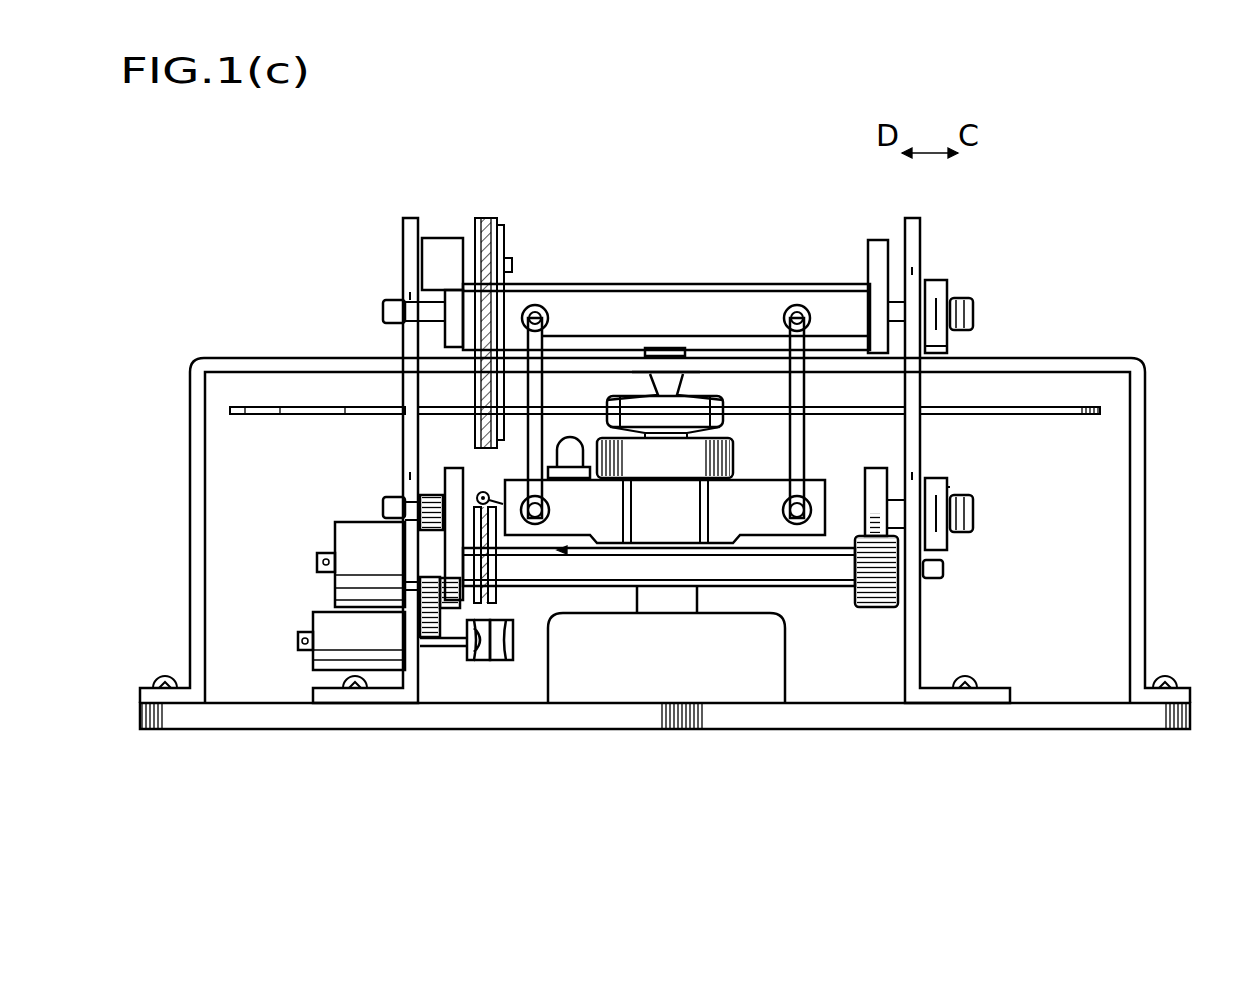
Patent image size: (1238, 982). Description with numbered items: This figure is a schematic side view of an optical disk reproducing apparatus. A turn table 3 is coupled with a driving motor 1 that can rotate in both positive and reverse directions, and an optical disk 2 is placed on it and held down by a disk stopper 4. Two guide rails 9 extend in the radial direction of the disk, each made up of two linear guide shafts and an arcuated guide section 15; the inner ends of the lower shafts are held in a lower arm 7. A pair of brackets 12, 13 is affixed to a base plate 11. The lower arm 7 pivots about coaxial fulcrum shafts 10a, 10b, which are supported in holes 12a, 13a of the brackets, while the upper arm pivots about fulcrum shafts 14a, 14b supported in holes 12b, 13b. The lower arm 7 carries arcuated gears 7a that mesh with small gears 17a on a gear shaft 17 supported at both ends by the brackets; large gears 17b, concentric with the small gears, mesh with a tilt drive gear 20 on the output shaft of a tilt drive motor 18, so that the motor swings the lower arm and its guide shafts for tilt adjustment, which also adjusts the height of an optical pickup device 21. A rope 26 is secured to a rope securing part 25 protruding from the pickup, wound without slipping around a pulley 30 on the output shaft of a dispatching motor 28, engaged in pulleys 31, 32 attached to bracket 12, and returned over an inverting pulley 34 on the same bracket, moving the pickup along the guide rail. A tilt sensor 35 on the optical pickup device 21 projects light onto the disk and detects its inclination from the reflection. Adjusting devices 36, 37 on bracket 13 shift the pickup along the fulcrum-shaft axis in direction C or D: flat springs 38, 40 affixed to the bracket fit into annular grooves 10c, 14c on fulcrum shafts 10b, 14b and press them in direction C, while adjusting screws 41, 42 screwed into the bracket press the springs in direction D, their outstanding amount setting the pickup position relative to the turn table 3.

The driving motor 1 is at (763, 690).
The optical disk 2 is at (320, 405).
The turn table 3 is at (722, 423).
The disk stopper 4 is at (735, 440).
The lower arm 7 is at (452, 480).
The arcuated gear 7a is at (420, 500).
The guide rail 9 is at (538, 332).
The fulcrum shaft 10a is at (383, 500).
The fulcrum shaft 10b is at (972, 500).
The annular groove 10c is at (948, 487).
The base plate 11 is at (1100, 722).
The bracket 12 is at (403, 430).
The hole 12a is at (410, 482).
The hole 12b is at (410, 300).
The bracket 13 is at (918, 390).
The hole 13a is at (914, 482).
The hole 13b is at (914, 275).
The fulcrum shaft 14a is at (383, 303).
The fulcrum shaft 14b is at (967, 300).
The annular groove 14c is at (947, 348).
The arcuated guide section 15 is at (548, 380).
The gear shaft 17 is at (820, 590).
The small gear 17a is at (447, 610).
The large gear 17b is at (435, 645).
The tilt drive motor 18 is at (345, 542).
The tilt drive gear 20 is at (410, 585).
The optical pickup device 21 is at (702, 398).
The rope securing part 25 is at (508, 550).
The rope 26 is at (488, 237).
The dispatching motor 28 is at (335, 630).
The pulley 30 is at (497, 655).
The pulley 31 is at (515, 652).
The pulley 32 is at (495, 232).
The inverting pulley 34 is at (570, 448).
The tilt sensor 35 is at (673, 447).
The adjusting device 36 is at (1041, 531).
The adjusting device 37 is at (1012, 279).
The flat spring 38 is at (945, 470).
The flat spring 40 is at (945, 290).
The adjusting screw 41 is at (972, 515).
The adjusting screw 42 is at (975, 312).